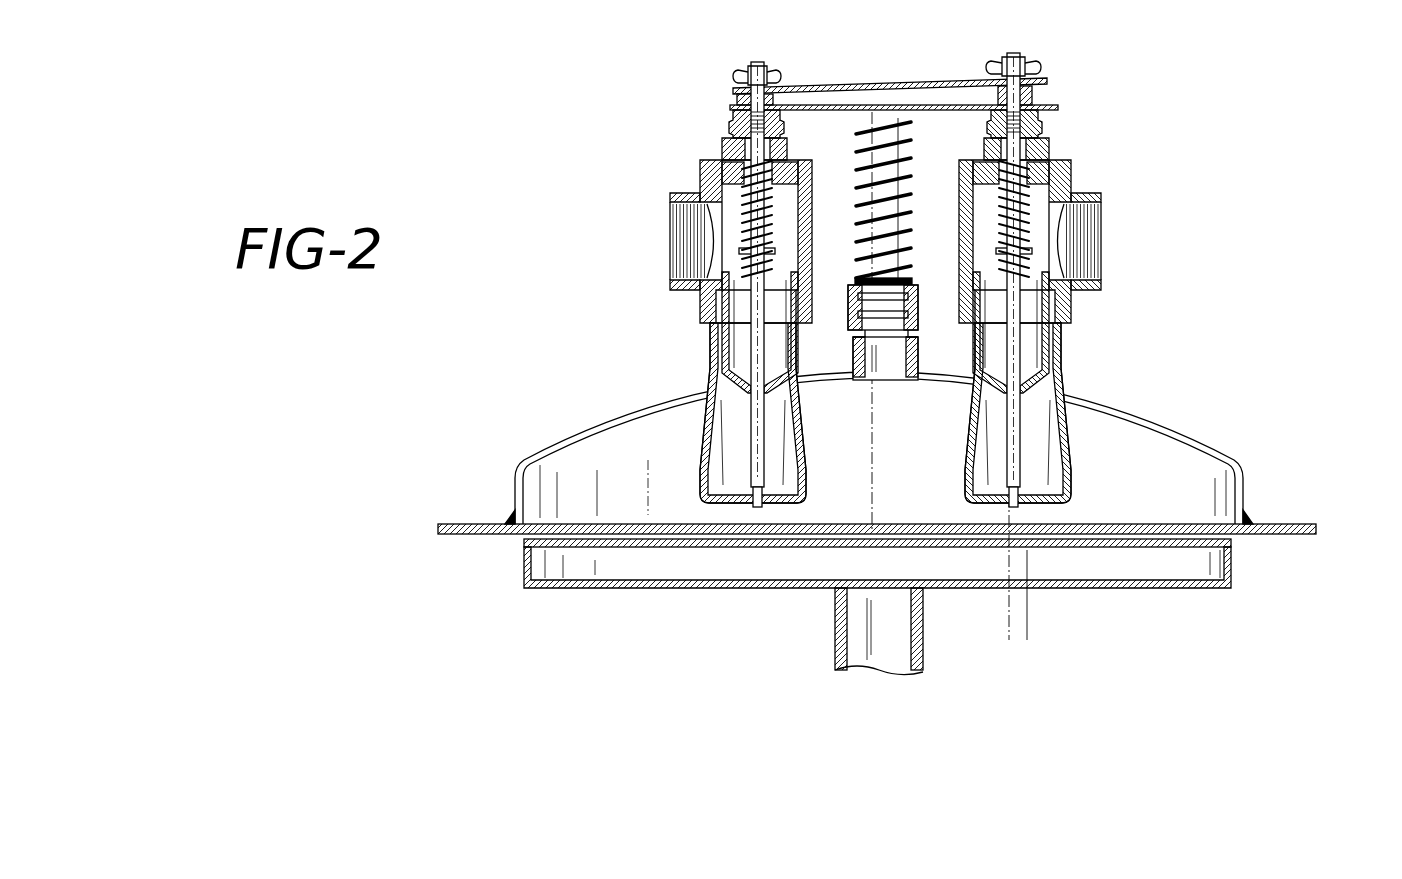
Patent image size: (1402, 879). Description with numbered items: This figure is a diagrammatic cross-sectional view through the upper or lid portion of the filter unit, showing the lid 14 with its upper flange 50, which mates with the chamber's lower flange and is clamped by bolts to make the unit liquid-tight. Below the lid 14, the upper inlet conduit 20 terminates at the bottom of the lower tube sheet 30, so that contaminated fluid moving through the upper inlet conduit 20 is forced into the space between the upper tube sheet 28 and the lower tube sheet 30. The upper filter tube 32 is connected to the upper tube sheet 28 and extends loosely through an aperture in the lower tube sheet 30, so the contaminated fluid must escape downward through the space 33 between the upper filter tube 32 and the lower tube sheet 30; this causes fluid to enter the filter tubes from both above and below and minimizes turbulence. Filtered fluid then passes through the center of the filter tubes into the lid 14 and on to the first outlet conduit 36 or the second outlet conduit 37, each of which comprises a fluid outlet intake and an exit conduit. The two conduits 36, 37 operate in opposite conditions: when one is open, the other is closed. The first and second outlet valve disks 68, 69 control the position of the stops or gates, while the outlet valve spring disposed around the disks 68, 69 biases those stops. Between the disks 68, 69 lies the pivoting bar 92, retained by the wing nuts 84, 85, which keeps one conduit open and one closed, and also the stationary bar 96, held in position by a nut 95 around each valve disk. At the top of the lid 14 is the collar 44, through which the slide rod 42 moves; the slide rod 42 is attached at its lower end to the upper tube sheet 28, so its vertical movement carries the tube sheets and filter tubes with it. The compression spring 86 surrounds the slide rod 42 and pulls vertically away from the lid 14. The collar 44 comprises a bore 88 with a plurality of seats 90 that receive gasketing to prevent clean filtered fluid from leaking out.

The lid 14 is at (1187, 437).
The upper inlet conduit 20 is at (835, 652).
The upper tube sheet 28 is at (1112, 540).
The lower tube sheet 30 is at (1112, 588).
The upper filter tube 32 is at (1005, 625).
The space 33 is at (1027, 588).
The first outlet conduit 36 is at (1049, 265).
The second outlet conduit 37 is at (709, 274).
The slide rod 42 is at (855, 145).
The collar 44 is at (852, 283).
The upper flange 50 is at (1313, 525).
The first outlet valve disk 68 is at (1014, 251).
The second outlet valve disk 69 is at (742, 250).
The wing nut 84 is at (1013, 66).
The wing nut 85 is at (740, 73).
The compression spring 86 is at (912, 140).
The bore 88 is at (902, 345).
The seats 90 is at (918, 300).
The pivoting bar 92 is at (905, 82).
The nut 95 is at (740, 98).
The stationary bar 96 is at (1052, 110).